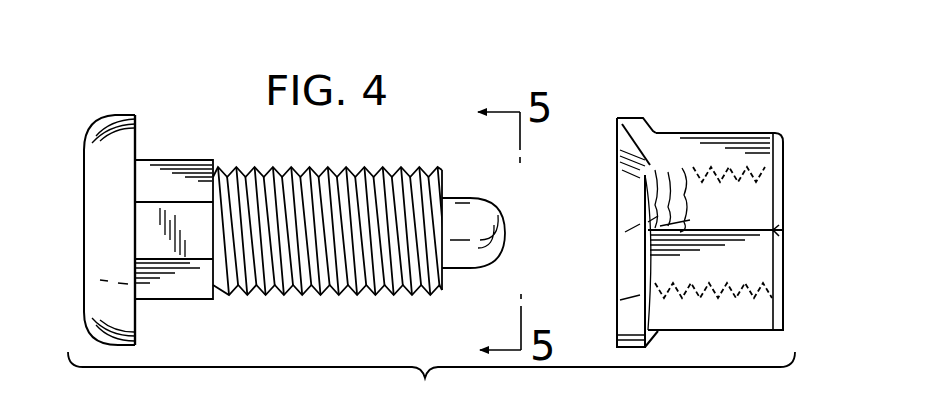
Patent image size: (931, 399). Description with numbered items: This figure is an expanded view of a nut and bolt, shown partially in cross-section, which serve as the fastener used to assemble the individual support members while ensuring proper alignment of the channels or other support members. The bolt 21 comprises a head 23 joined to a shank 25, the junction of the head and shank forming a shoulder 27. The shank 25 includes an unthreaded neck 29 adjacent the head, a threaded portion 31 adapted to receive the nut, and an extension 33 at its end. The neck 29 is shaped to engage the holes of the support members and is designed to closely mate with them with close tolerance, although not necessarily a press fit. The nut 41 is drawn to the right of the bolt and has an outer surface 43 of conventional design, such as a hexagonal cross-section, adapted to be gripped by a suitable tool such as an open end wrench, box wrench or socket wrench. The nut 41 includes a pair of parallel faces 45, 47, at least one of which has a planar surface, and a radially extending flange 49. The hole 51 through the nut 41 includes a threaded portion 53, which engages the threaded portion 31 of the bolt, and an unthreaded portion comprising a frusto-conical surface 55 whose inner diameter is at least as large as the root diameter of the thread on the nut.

The bolt 21 is at (111, 110).
The head 23 is at (89, 134).
The shoulder 27 is at (137, 136).
The unthreaded neck 29 is at (189, 176).
The threaded portion 31 is at (337, 292).
The shank 25 is at (401, 294).
The extension 33 is at (486, 213).
The nut 41 is at (753, 127).
The outer surface 43 is at (762, 310).
The face 45 is at (619, 127).
The face 47 is at (784, 154).
The radially extending flange 49 is at (634, 117).
The hole 51 is at (662, 178).
The threaded portion 53 is at (660, 190).
The frusto-conical surface 55 is at (625, 178).